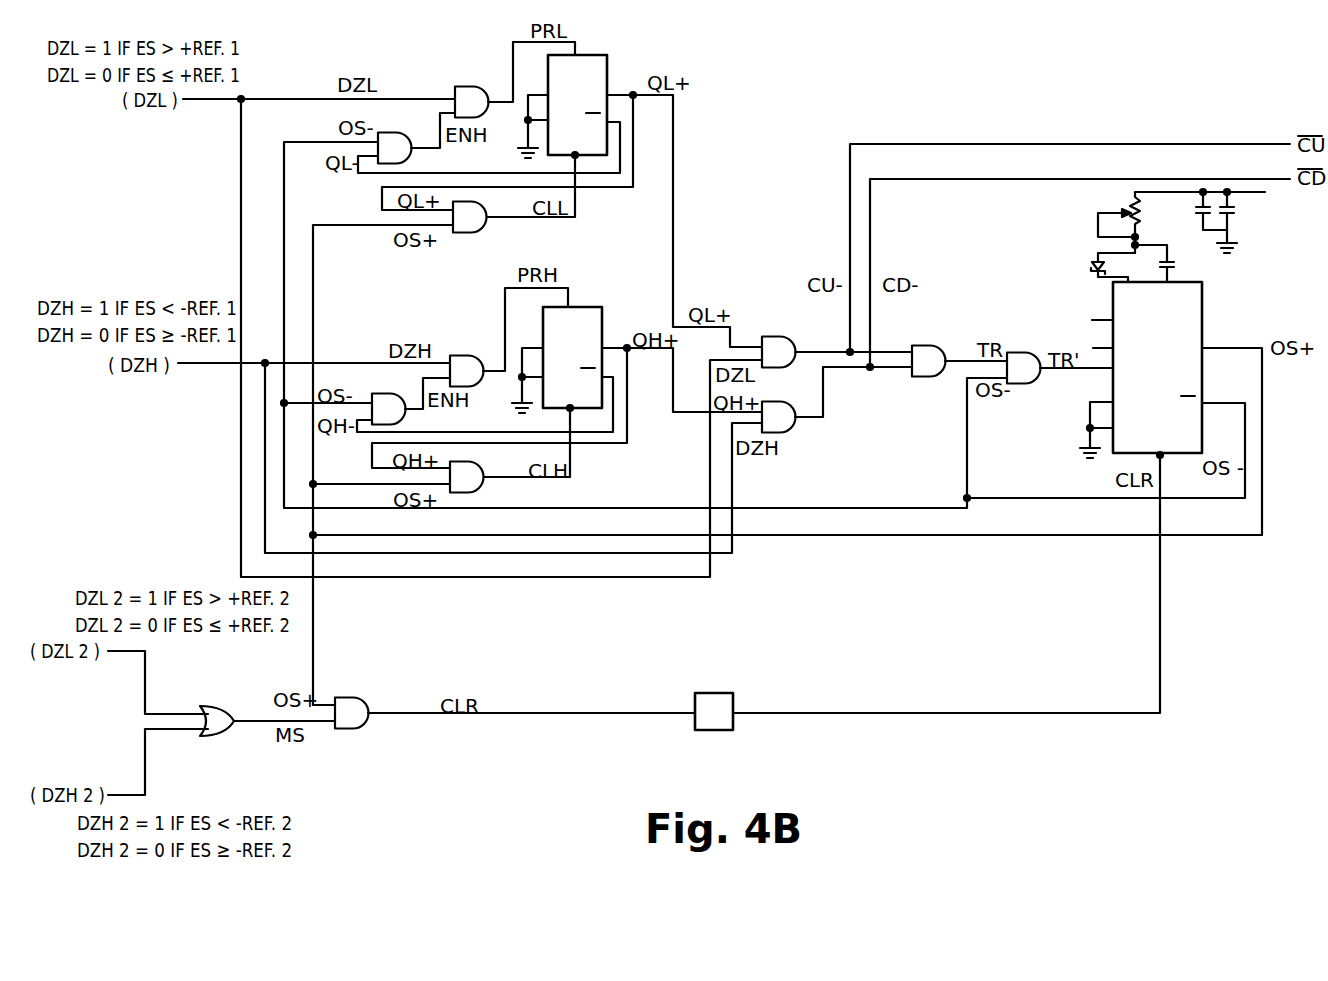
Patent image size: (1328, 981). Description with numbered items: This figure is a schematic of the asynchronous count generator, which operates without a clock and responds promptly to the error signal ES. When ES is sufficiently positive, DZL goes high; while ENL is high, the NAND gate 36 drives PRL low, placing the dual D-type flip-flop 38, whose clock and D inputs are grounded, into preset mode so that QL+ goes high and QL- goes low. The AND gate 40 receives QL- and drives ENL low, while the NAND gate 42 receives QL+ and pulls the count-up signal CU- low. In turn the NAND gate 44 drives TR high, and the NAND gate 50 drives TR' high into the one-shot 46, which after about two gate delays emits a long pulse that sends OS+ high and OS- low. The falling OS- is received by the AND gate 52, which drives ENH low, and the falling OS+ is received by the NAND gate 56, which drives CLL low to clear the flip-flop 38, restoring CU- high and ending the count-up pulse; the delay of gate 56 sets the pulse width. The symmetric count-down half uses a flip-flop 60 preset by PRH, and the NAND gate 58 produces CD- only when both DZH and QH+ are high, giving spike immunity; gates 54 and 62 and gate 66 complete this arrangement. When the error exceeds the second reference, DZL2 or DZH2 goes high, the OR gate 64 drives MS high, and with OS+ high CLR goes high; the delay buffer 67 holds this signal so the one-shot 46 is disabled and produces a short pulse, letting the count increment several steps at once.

The NAND gate 36 is at (461, 87).
The dual D-type positive-edge-triggered flip-flop with preset and clear 38 is at (607, 56).
The AND gate 40 is at (392, 133).
The NAND gate 42 is at (766, 337).
The NAND gate 44 is at (915, 346).
The monostable or retriggerable multivibrator (one-shot) 46 is at (1202, 292).
The NAND gate 50 is at (1012, 353).
The AND gate 52 is at (365, 395).
The AND gate (DZH enable) 54 is at (458, 356).
The NAND gate 56 is at (475, 202).
The NAND gate 58 is at (784, 402).
The flip-flop 60 is at (590, 307).
The AND gate (clear high latch) 62 is at (478, 462).
The OR gate 64 is at (218, 708).
The AND gate (clear generation) 66 is at (355, 698).
The delay buffer 67 is at (728, 693).